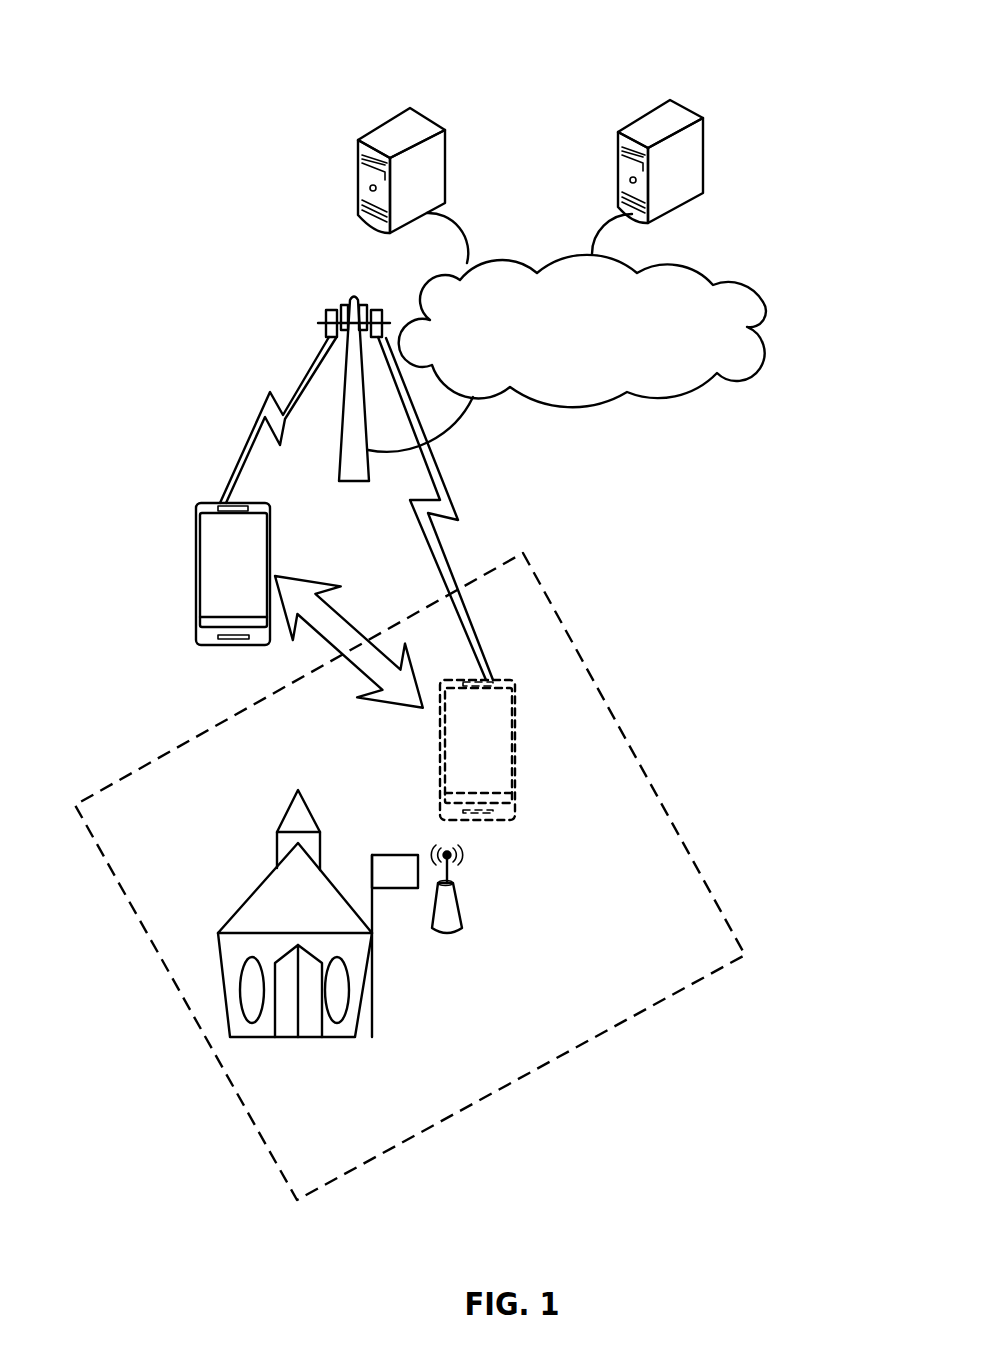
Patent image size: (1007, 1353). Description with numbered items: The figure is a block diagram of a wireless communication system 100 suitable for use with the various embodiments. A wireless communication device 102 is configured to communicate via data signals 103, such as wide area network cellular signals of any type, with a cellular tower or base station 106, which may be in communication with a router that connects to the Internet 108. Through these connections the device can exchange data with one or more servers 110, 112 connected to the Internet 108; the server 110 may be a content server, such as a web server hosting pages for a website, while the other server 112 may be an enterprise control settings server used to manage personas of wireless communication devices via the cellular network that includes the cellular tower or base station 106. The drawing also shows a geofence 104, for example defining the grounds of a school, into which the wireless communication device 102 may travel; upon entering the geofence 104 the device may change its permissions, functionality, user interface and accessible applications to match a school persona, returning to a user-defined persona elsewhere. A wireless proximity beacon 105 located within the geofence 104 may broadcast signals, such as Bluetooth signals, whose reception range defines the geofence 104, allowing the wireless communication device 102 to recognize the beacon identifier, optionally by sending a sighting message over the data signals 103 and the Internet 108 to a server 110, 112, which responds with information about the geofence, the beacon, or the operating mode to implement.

The wireless communication system 100 is at (122, 97).
The wireless communication device 102 is at (196, 570).
The data signals 103 is at (256, 422).
The geofence 104 is at (565, 625).
The wireless proximity beacon 105 is at (460, 905).
The cellular tower or base station 106 is at (333, 313).
The Internet 108 is at (763, 302).
The server 110 is at (445, 158).
The server 112 is at (705, 163).